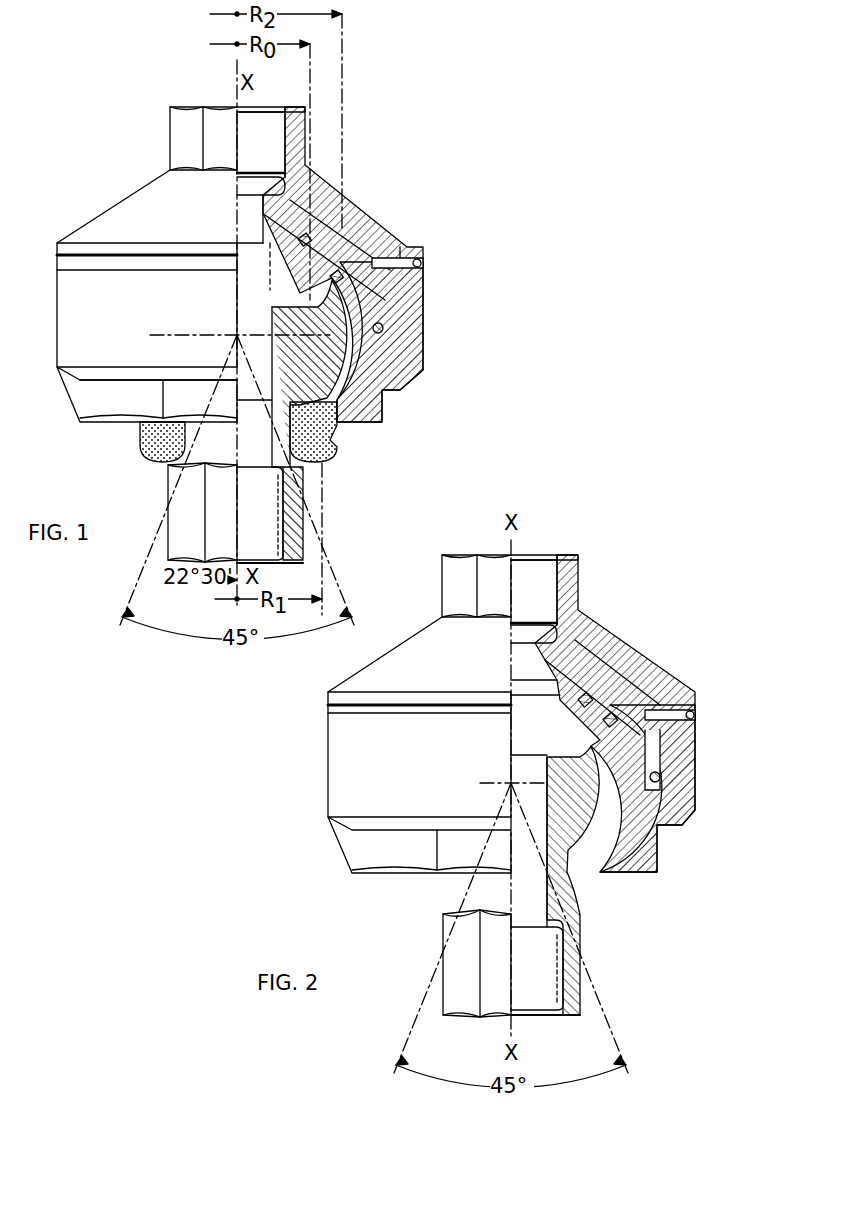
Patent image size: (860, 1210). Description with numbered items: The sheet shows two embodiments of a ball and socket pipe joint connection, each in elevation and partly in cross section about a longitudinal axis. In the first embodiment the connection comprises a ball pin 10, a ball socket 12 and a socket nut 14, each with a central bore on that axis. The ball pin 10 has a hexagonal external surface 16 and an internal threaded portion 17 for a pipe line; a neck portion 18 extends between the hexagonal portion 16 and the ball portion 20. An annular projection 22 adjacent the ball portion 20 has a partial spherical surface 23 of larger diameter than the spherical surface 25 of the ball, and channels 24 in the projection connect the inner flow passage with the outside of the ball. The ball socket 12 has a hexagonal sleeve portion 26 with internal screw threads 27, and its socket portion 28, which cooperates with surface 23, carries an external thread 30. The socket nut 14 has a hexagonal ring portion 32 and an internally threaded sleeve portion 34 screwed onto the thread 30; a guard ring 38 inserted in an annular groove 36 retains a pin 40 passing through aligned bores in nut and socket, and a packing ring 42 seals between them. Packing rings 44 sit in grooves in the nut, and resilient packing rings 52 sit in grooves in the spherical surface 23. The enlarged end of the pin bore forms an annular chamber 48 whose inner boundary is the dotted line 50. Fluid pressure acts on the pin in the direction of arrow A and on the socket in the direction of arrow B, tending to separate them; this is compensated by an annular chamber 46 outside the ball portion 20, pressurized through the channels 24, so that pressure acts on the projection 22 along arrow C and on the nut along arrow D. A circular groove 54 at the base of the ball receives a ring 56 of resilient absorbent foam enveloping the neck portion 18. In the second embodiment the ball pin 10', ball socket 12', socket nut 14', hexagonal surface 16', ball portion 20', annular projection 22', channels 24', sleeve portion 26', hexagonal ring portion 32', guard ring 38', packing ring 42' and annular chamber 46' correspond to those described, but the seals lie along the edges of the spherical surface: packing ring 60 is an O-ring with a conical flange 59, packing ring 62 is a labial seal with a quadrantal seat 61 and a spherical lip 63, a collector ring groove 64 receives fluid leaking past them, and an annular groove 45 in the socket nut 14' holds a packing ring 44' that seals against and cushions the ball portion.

In FIG. 1, the ball pin 10 is at (302, 481).
In FIG. 1, the ball socket 12 is at (330, 264).
In FIG. 1, the socket nut 14 is at (387, 342).
In FIG. 1, the hexagonal external surface 16 is at (173, 512).
In FIG. 1, the internal threaded portion 17 is at (296, 540).
In FIG. 1, the neck portion 18 is at (332, 432).
In FIG. 1, the ball portion 20 is at (262, 420).
In FIG. 1, the annular projection 22 is at (382, 209).
In FIG. 1, the partial spherical surface 23 is at (296, 271).
In FIG. 2, the partial spherical surface 23 is at (546, 693).
In FIG. 1, the channels 24 is at (236, 305).
In FIG. 1, the spherical surface 25 is at (275, 340).
In FIG. 1, the hexagonal sleeve portion 26 is at (232, 120).
In FIG. 1, the internal screw threads 27 is at (300, 118).
In FIG. 1, the socket portion 28 is at (288, 185).
In FIG. 1, the external thread 30 is at (403, 250).
In FIG. 1, the hexagonal ring portion 32 is at (134, 394).
In FIG. 1, the internally threaded sleeve portion 34 is at (425, 292).
In FIG. 1, the annular groove 36 is at (425, 262).
In FIG. 1, the guard ring 38 is at (440, 263).
In FIG. 1, the pin 40 is at (420, 254).
In FIG. 1, the packing ring 42 is at (422, 352).
In FIG. 1, the packing rings 44 is at (411, 421).
In FIG. 1, the annular chamber 46 is at (440, 319).
In FIG. 1, the annular chamber 48 is at (247, 258).
In FIG. 1, the dotted line 50 is at (265, 268).
In FIG. 1, the packing rings 52 is at (318, 238).
In FIG. 1, the circular groove 54 is at (283, 390).
In FIG. 1, the ring 56 is at (150, 445).
In FIG. 1, the arrow A is at (280, 258).
In FIG. 1, the arrow B is at (283, 222).
In FIG. 1, the arrow C is at (410, 300).
In FIG. 1, the arrow D is at (350, 330).
In FIG. 2, the ball pin 10' is at (574, 958).
In FIG. 2, the ball socket 12' is at (603, 713).
In FIG. 2, the socket nut 14' is at (664, 789).
In FIG. 2, the hexagonal external surface 16' is at (454, 963).
In FIG. 2, the ball portion 20' is at (555, 880).
In FIG. 2, the annular projection 22' is at (654, 647).
In FIG. 2, the channels 24' is at (516, 753).
In FIG. 2, the hexagonal sleeve portion 26' is at (510, 569).
In FIG. 2, the hexagonal ring portion 32' is at (419, 865).
In FIG. 2, the guard ring 38' is at (695, 720).
In FIG. 2, the packing ring 42' is at (697, 798).
In FIG. 2, the packing ring 44' is at (703, 833).
In FIG. 2, the annular groove 45 is at (656, 872).
In FIG. 2, the annular chamber 46' is at (696, 776).
In FIG. 2, the conical flange 59 is at (545, 690).
In FIG. 2, the packing ring 60 is at (540, 668).
In FIG. 2, the quadrantal seat 61 is at (593, 730).
In FIG. 2, the packing ring 62 is at (662, 745).
In FIG. 2, the spherical lip 63 is at (618, 730).
In FIG. 2, the collector ring groove 64 is at (598, 698).